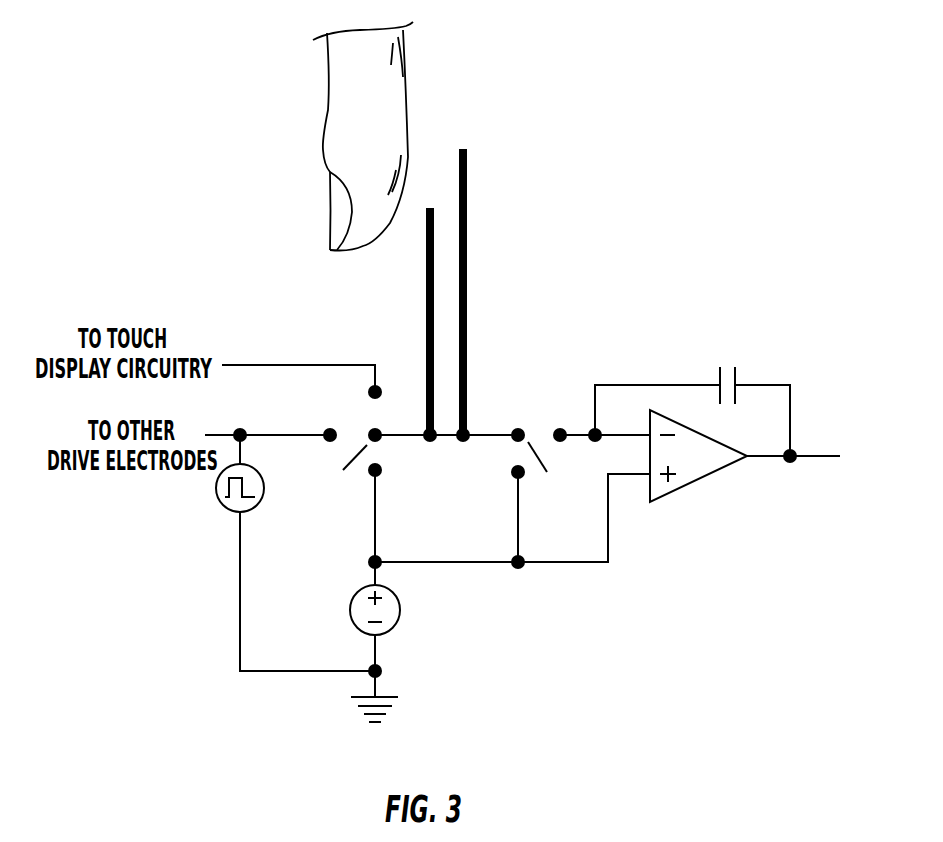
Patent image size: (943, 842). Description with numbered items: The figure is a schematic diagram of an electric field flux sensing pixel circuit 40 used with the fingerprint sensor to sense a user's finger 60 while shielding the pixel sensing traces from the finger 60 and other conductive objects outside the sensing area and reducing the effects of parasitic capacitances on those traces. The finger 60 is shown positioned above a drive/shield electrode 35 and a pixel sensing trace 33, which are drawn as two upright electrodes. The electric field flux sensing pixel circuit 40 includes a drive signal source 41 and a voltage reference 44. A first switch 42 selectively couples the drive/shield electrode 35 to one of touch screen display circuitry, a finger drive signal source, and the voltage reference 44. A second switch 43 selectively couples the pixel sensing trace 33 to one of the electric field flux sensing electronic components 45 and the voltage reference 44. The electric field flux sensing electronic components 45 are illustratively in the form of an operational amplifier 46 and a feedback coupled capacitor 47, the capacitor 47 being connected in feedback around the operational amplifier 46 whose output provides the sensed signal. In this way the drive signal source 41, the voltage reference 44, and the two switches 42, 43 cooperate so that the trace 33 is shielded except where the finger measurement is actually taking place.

The pixel sensing trace 33 is at (468, 228).
The drive/shield electrode 35 is at (427, 332).
The electric field flux sensing pixel circuit 40 is at (565, 300).
The drive signal source 41 is at (222, 505).
The first switch 42 is at (365, 447).
The second switch 43 is at (532, 448).
The voltage reference 44 is at (400, 610).
The electric field flux sensing electronic components 45 is at (740, 488).
The operational amplifier 46 is at (672, 492).
The feedback coupled capacitor 47 is at (738, 382).
The finger 60 is at (333, 128).